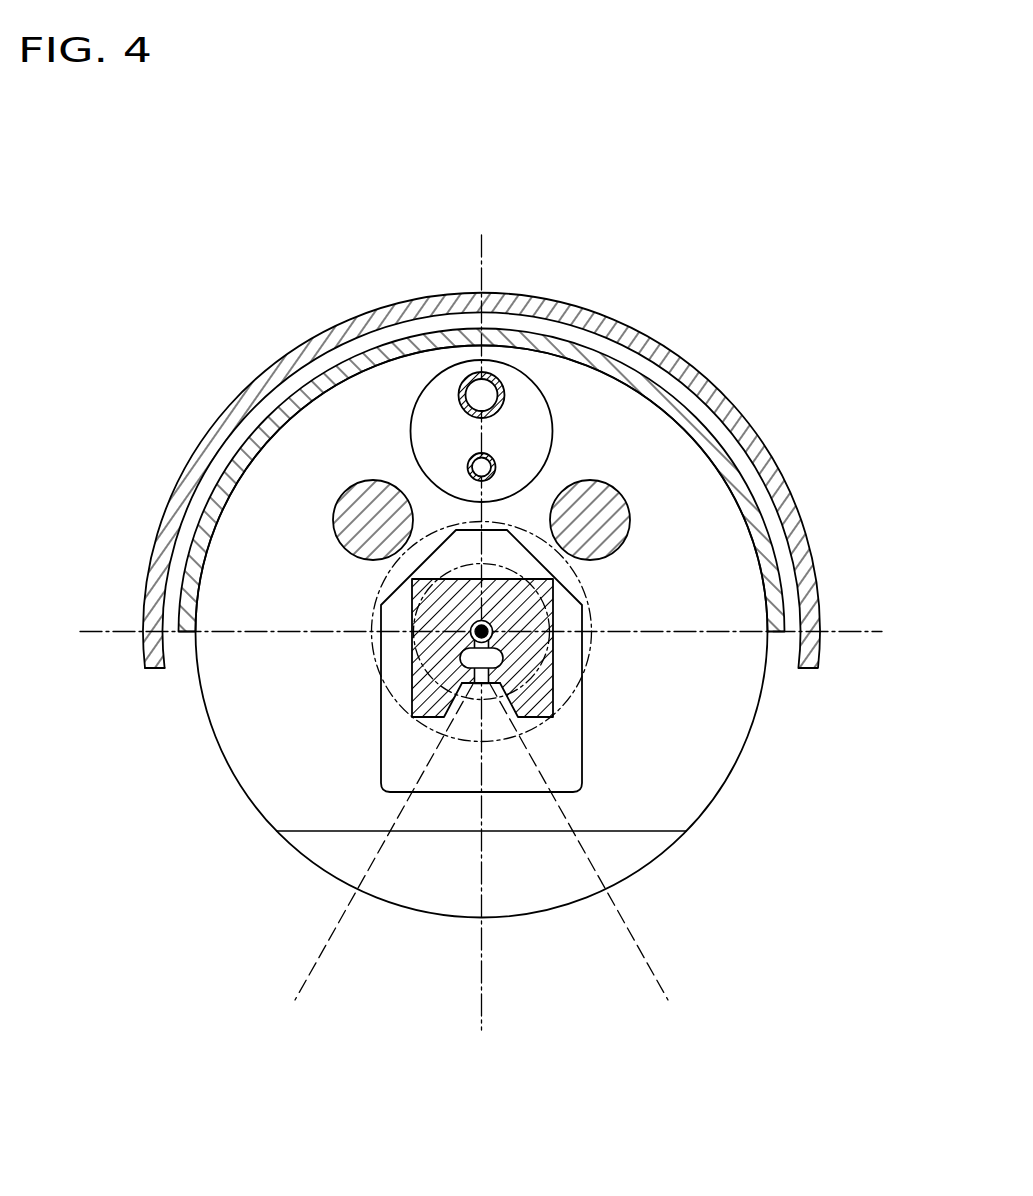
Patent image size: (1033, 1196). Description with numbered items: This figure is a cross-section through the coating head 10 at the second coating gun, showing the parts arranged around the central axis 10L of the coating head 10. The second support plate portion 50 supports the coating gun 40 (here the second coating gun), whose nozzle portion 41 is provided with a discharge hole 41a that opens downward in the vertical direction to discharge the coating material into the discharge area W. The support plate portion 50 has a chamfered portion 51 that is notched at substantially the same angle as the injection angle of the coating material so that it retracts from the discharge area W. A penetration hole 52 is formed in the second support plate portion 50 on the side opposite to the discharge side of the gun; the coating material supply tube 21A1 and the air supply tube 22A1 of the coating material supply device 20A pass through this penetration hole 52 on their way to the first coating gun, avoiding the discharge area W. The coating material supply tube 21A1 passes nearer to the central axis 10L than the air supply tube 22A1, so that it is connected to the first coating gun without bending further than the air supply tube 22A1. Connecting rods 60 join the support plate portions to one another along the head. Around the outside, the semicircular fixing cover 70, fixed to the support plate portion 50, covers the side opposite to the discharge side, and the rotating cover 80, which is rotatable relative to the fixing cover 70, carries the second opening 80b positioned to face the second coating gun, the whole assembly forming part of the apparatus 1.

The machine tool 1 is at (197, 260).
The coating head 10 is at (664, 324).
The central axis 10L is at (486, 635).
The coating material supply device 20A is at (425, 317).
The coating material supply tube 21A1 is at (467, 469).
The air supply tube 22A1 is at (457, 394).
The coating gun 40 is at (583, 606).
The nozzle portion 41 is at (411, 622).
The discharge hole 41a is at (480, 688).
The support plate portion 50 is at (587, 392).
The chamfered portion 51 is at (520, 879).
The penetration hole 52 is at (513, 391).
The connecting rod 60 is at (357, 483).
The fixing cover 70 is at (358, 353).
The rotating cover 80 is at (303, 341).
The second opening 80b is at (152, 669).
The discharge area W is at (318, 957).